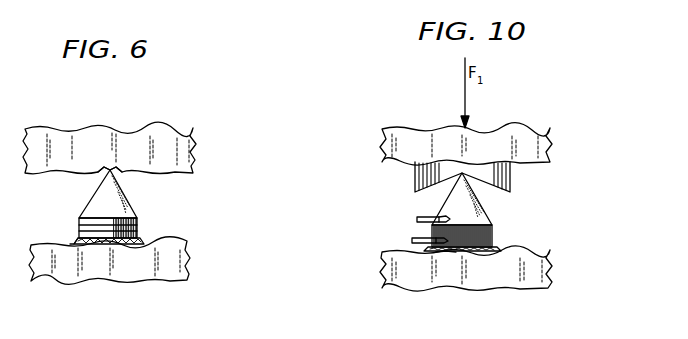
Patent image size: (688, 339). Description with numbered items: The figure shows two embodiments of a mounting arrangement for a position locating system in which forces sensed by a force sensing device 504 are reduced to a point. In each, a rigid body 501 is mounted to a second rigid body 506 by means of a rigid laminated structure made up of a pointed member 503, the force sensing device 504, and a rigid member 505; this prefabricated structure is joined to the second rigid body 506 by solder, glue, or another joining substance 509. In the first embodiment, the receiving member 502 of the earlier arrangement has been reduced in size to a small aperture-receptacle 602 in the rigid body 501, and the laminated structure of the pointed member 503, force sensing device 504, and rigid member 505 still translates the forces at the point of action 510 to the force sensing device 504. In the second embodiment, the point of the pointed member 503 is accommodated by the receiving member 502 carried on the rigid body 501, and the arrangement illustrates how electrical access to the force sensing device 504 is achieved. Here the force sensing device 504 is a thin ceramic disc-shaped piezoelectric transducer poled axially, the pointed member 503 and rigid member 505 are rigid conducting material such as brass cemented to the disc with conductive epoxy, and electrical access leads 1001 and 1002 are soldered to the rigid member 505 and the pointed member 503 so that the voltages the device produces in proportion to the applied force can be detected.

In FIG. 6, the rigid body 501 is at (63, 136).
In FIG. 10, the rigid body 501 is at (494, 137).
In FIG. 10, the member 502 is at (415, 180).
In FIG. 6, the pointed member 503 is at (133, 213).
In FIG. 10, the pointed member 503 is at (480, 213).
In FIG. 6, the force sensing device 504 is at (140, 228).
In FIG. 10, the force sensing device 504 is at (495, 232).
In FIG. 6, the rigid member 505 is at (145, 238).
In FIG. 10, the rigid member 505 is at (500, 248).
In FIG. 6, the second rigid body 506 is at (104, 269).
In FIG. 10, the second rigid body 506 is at (498, 275).
In FIG. 6, the joining substance 509 is at (75, 240).
In FIG. 10, the joining substance 509 is at (447, 253).
In FIG. 6, the point of action 510 is at (112, 171).
In FIG. 10, the point of action 510 is at (468, 172).
In FIG. 6, the aperture-receptacle 602 is at (100, 172).
In FIG. 10, the electrical access lead 1001 is at (413, 240).
In FIG. 10, the electrical access lead 1002 is at (418, 220).